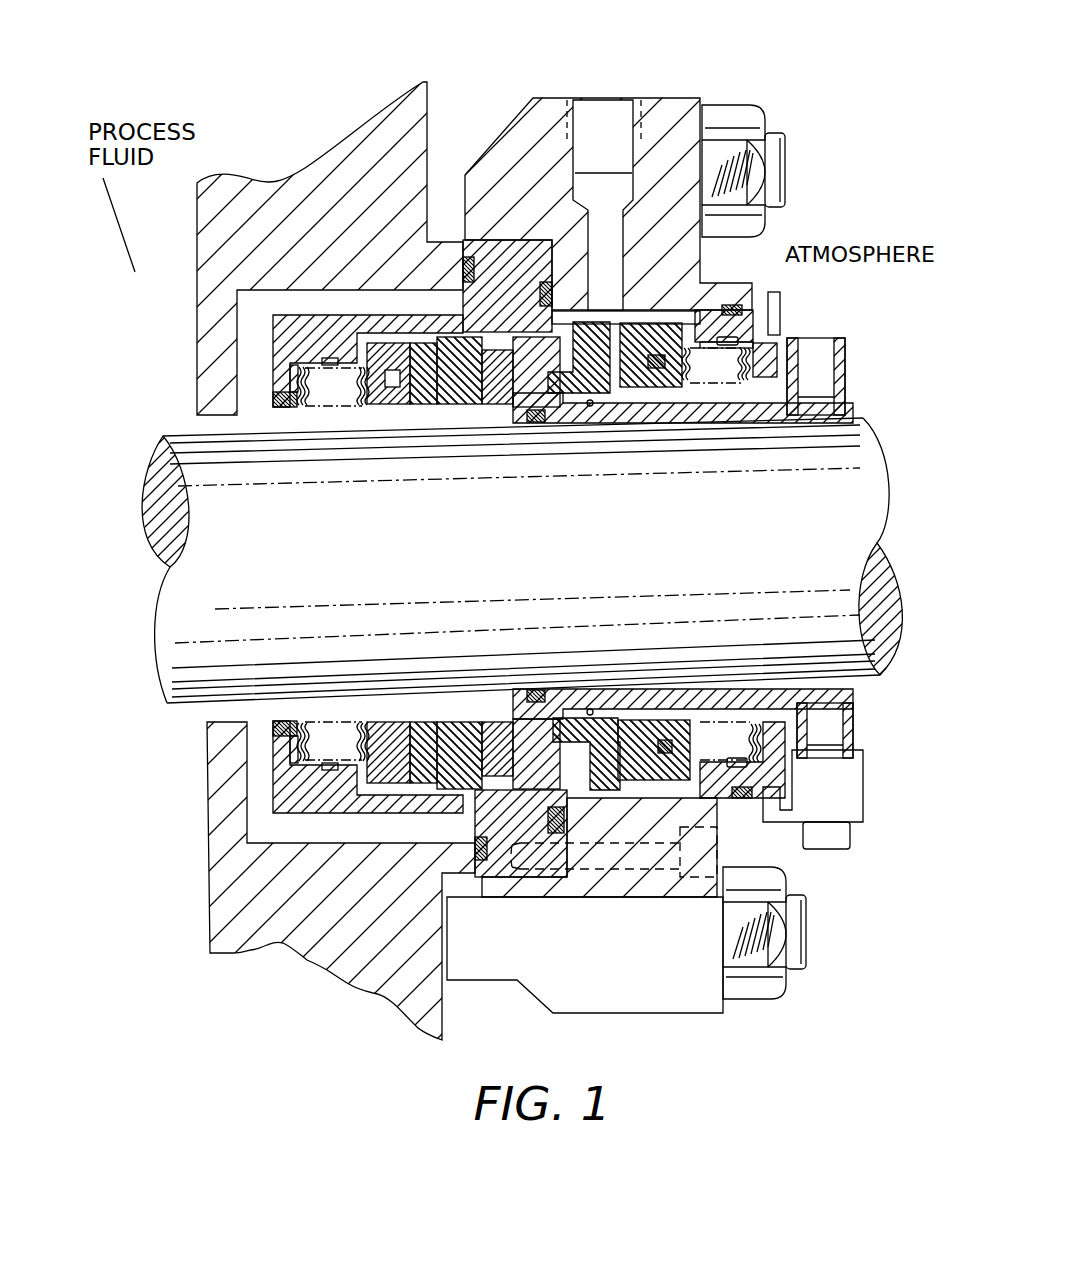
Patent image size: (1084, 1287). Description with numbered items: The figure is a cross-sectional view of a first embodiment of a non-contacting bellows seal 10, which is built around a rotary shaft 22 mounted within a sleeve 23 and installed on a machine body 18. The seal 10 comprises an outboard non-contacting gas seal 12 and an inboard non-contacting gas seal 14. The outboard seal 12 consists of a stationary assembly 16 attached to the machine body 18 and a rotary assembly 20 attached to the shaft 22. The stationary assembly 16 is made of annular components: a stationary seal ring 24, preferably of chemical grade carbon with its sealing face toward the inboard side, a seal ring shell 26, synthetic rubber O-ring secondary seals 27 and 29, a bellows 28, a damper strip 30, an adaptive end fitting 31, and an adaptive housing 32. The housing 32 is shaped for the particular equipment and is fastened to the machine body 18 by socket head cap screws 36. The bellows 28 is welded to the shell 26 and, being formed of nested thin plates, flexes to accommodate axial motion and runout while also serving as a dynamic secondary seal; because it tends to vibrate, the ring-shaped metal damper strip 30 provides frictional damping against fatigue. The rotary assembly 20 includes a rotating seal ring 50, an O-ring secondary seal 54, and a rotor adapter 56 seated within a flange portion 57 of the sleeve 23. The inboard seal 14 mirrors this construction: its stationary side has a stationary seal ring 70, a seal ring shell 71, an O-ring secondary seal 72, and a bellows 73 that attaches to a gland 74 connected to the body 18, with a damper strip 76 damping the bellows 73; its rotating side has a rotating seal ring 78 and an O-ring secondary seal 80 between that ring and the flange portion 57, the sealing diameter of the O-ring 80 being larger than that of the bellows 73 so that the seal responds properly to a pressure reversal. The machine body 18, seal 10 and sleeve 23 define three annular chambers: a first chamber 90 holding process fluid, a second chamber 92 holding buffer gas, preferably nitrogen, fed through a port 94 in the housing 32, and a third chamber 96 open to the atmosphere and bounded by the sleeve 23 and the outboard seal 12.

The seal 10 is at (795, 228).
The outboard non-contacting gas seal 12 is at (683, 532).
The inboard non-contacting gas seal 14 is at (370, 530).
The stationary assembly 16 is at (722, 390).
The machine body 18 is at (373, 143).
The rotary assembly 20 is at (590, 410).
The rotary shaft 22 is at (857, 503).
The sleeve 23 is at (787, 410).
The stationary seal ring 24 is at (628, 375).
The seal ring shell 26 is at (697, 383).
The O-ring secondary seal 27 is at (689, 385).
The bellows 28 is at (747, 380).
The O-ring secondary seal 29 is at (732, 306).
The damper strip 30 is at (766, 312).
The adaptive end fitting 31 is at (770, 343).
The adaptive housing 32 is at (657, 127).
The socket head cap screws 36 is at (730, 120).
The rotating seal ring 50 is at (600, 400).
The O-ring secondary seal 54 is at (567, 395).
The rotor adapter 56 is at (580, 330).
The flange portion 57 is at (522, 345).
The stationary seal ring 70 is at (420, 420).
The seal ring shell 71 is at (366, 408).
The O-ring secondary seal 72 is at (401, 406).
The bellows 73 is at (300, 412).
The gland 74 is at (330, 317).
The damper strip 76 is at (300, 330).
The rotating seal ring 78 is at (455, 406).
The O-ring secondary seal 80 is at (503, 406).
The first chamber 90 is at (325, 410).
The second chamber 92 is at (642, 317).
The port 94 is at (587, 123).
The third annular chamber 96 is at (773, 388).